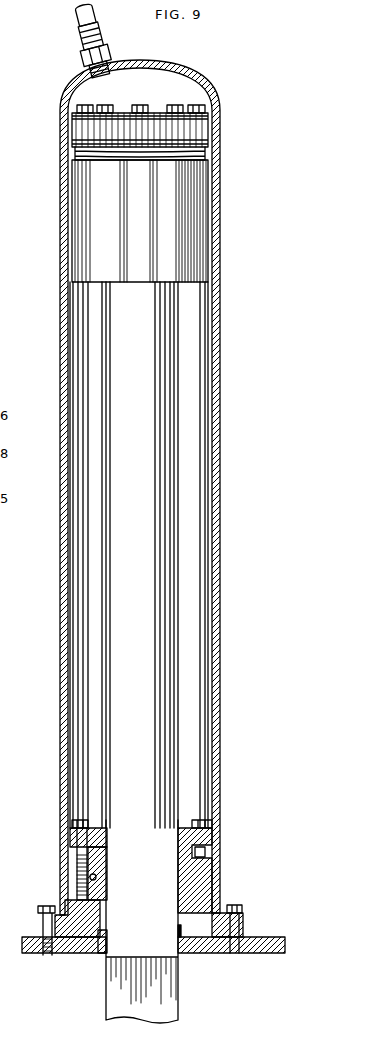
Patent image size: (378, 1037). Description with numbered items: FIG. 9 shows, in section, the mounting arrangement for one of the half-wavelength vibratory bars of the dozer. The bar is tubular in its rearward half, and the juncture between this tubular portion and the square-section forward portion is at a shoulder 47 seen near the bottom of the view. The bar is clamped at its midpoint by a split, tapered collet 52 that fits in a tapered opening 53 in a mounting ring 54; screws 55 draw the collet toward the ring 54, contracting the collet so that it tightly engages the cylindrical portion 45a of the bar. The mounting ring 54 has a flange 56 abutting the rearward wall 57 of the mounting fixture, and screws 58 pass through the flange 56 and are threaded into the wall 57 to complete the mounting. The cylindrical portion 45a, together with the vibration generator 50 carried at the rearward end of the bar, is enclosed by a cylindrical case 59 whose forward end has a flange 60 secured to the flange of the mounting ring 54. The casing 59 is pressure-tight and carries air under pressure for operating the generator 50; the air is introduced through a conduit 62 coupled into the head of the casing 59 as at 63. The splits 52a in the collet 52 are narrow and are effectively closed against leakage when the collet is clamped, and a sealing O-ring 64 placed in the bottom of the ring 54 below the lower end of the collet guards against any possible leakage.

The conduit 62 is at (83, 17).
The coupling of conduit into casing head 63 is at (105, 67).
The vibration generator 50 is at (206, 206).
The cylindrical case 59 is at (218, 407).
The cylindrical portion of the bar 45a is at (110, 518).
The split, tapered collet 52 is at (70, 830).
The splits in collet 52a is at (98, 855).
The tapered opening 53 is at (90, 877).
The mounting ring 54 is at (205, 880).
The screws 55 is at (207, 822).
The flange of mounting ring 56 is at (245, 928).
The rearward wall of mounting fixture 57 is at (237, 953).
The screws 58 is at (240, 908).
The flange of casing 60 is at (38, 920).
The sealing O-ring 64 is at (100, 953).
The shoulder 47 is at (115, 962).